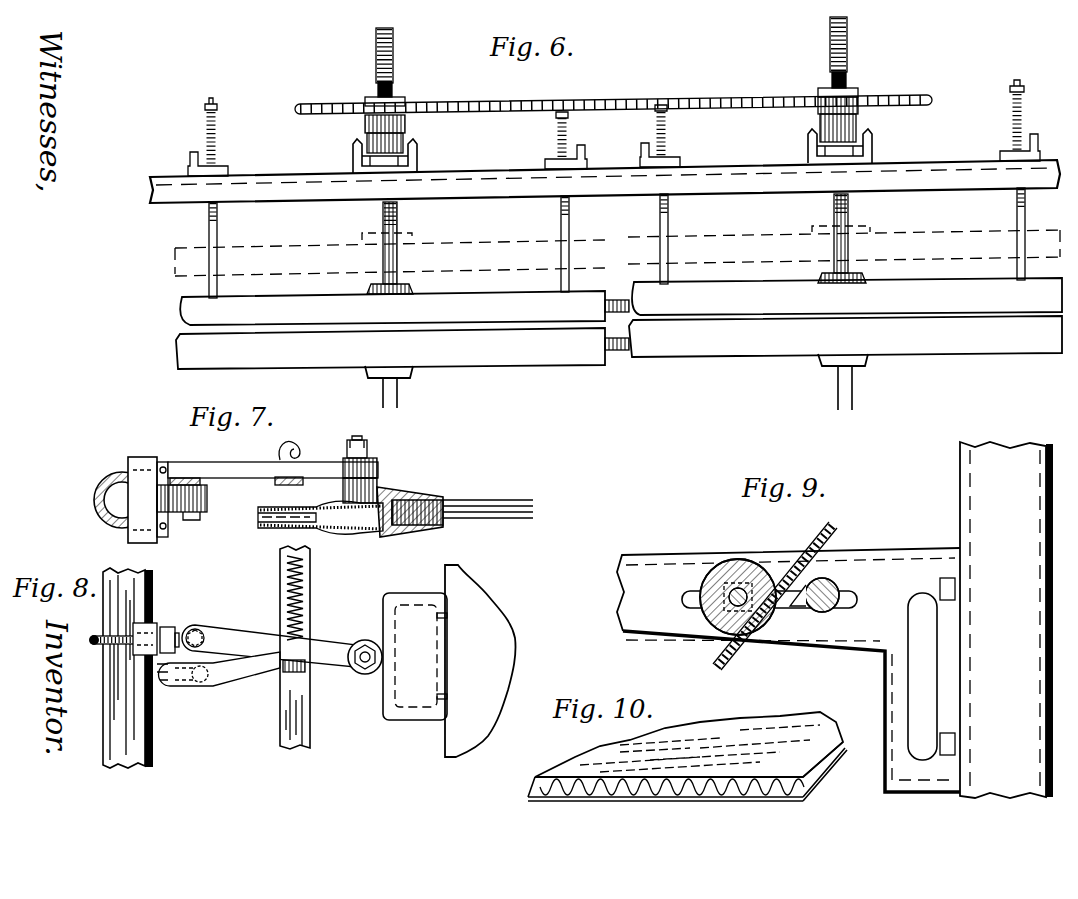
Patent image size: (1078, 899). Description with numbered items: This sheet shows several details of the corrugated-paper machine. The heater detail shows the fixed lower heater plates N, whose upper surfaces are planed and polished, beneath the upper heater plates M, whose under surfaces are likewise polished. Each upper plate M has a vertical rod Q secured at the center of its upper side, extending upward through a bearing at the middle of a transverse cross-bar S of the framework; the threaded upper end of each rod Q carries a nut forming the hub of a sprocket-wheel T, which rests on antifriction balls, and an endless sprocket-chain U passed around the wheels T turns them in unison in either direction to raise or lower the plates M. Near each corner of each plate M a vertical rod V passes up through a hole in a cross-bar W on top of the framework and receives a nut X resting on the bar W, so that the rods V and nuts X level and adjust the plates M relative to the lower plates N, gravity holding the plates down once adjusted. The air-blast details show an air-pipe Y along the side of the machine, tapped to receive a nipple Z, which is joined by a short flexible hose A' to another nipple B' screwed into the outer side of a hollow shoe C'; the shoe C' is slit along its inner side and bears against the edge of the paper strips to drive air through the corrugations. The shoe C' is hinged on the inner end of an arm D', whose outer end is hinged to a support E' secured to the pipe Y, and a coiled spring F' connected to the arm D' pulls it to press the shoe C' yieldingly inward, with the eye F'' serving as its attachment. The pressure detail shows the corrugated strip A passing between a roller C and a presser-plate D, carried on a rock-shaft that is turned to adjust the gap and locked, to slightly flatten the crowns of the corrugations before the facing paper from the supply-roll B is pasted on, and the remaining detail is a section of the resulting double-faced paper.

In FIG. 6, the endless sprocket-chain U is at (745, 102).
In FIG. 6, the sprocket-wheel T is at (406, 126).
In FIG. 6, the transverse cross-bar S is at (416, 164).
In FIG. 6, the cross-bar W is at (188, 170).
In FIG. 6, the nut X is at (220, 170).
In FIG. 6, the vertical rod V is at (218, 232).
In FIG. 6, the vertical rod Q is at (399, 222).
In FIG. 6, the upper heater plate M is at (621, 301).
In FIG. 6, the lower heater plate N is at (619, 342).
In FIG. 7, the air-pipe Y is at (118, 500).
In FIG. 8, the air-pipe Y is at (148, 584).
In FIG. 7, the arm D' is at (273, 458).
In FIG. 8, the arm D' is at (282, 645).
In FIG. 7, the hook eye F'' is at (299, 440).
In FIG. 7, the support E' is at (182, 510).
In FIG. 8, the support E' is at (158, 625).
In FIG. 7, the flexible hose A' is at (320, 505).
In FIG. 8, the flexible hose A' is at (218, 680).
In FIG. 7, the nipple B' is at (360, 517).
In FIG. 7, the hollow shoe C' is at (410, 500).
In FIG. 8, the hollow shoe C' is at (415, 647).
In FIG. 7, the single-faced corrugated paper strip A is at (488, 494).
In FIG. 9, the single-faced corrugated paper strip A is at (785, 599).
In FIG. 7, the facing-paper supply-roll B is at (488, 525).
In FIG. 8, the facing-paper supply-roll B is at (480, 661).
In FIG. 8, the nipple Z is at (160, 676).
In FIG. 8, the coiled spring F' is at (307, 647).
In FIG. 9, the roller C is at (738, 582).
In FIG. 9, the presser-plate D is at (812, 626).